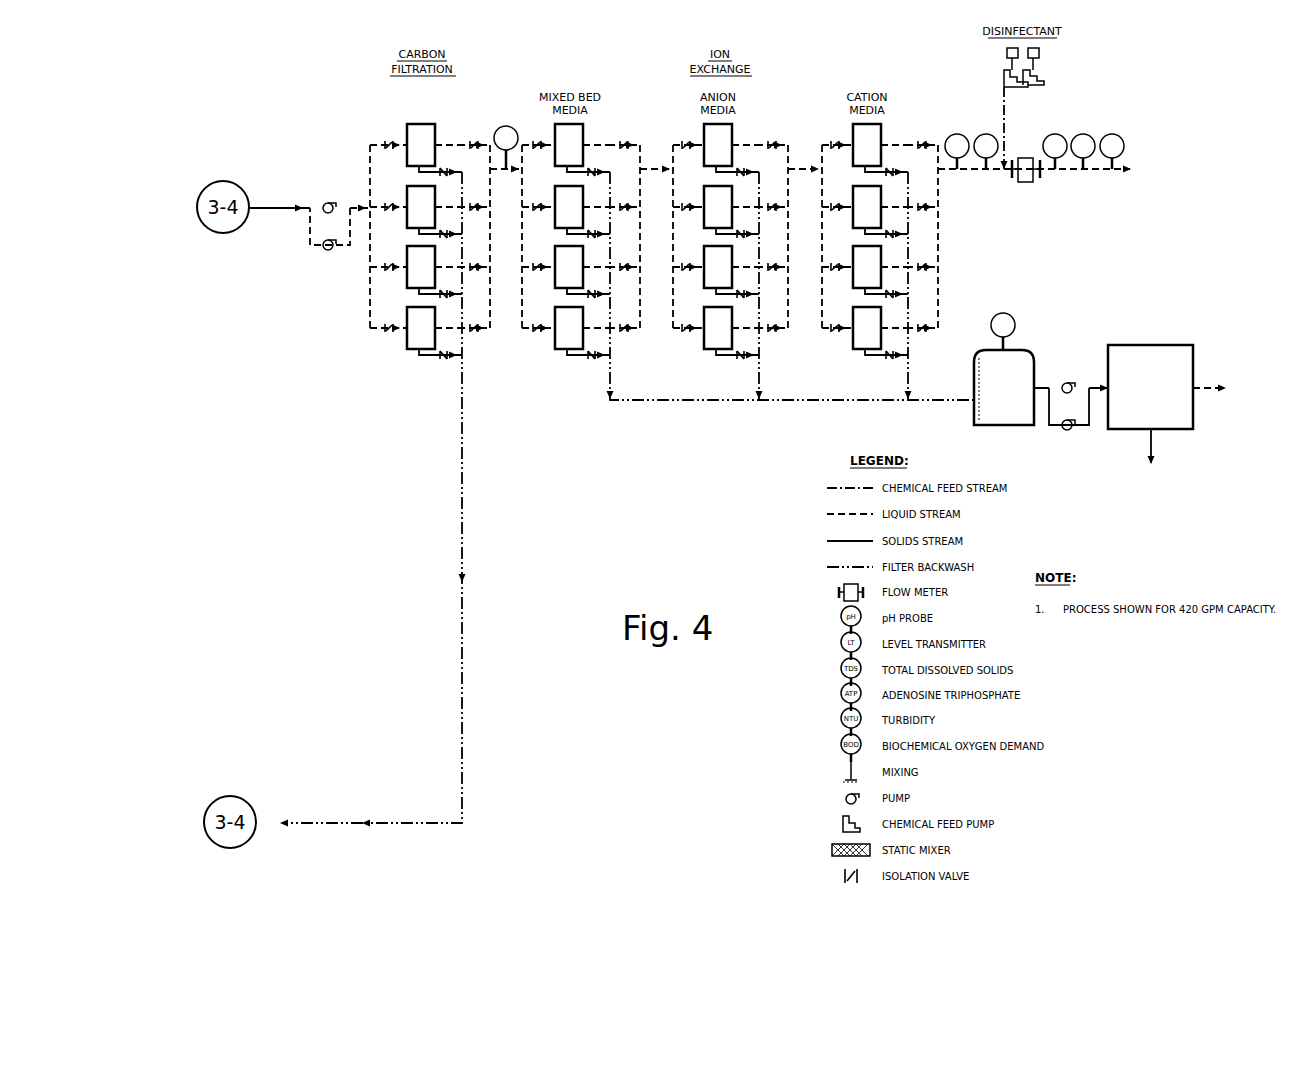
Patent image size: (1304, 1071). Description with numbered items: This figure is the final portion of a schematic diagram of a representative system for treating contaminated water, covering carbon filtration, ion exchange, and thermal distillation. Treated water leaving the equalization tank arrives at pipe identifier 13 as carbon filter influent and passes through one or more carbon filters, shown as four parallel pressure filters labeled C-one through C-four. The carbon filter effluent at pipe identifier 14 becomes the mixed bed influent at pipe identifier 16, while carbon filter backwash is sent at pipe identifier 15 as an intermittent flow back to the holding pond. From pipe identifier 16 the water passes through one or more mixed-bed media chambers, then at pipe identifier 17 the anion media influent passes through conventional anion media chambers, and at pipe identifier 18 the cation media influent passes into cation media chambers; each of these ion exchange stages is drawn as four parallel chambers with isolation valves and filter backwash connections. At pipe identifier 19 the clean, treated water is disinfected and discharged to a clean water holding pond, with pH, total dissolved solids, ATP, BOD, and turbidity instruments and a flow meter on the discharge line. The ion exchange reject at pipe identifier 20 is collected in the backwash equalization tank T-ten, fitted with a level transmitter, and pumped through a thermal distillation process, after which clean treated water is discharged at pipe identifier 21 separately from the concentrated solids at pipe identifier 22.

The carbon filter influent pipe identifier 13 is at (310, 211).
The carbon filter effluent pipe identifier 14 is at (507, 218).
The carbon filter backwash pipe identifier 15 is at (388, 499).
The mixed bed influent pipe identifier 16 is at (507, 170).
The anion media influent pipe identifier 17 is at (597, 239).
The cation media influent pipe identifier 18 is at (747, 239).
The clean water discharge pipe identifier 19 is at (1023, 203).
The ion exchange reject pipe identifier 20 is at (821, 298).
The clean water discharge pipe identifier from thermal distillation 21 is at (1151, 387).
The concentrated solids pipe identifier 22 is at (1151, 463).